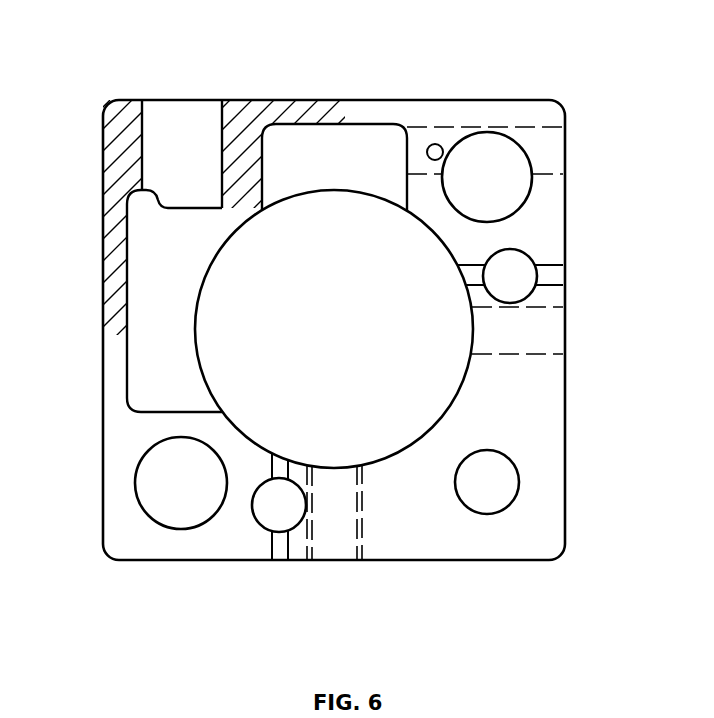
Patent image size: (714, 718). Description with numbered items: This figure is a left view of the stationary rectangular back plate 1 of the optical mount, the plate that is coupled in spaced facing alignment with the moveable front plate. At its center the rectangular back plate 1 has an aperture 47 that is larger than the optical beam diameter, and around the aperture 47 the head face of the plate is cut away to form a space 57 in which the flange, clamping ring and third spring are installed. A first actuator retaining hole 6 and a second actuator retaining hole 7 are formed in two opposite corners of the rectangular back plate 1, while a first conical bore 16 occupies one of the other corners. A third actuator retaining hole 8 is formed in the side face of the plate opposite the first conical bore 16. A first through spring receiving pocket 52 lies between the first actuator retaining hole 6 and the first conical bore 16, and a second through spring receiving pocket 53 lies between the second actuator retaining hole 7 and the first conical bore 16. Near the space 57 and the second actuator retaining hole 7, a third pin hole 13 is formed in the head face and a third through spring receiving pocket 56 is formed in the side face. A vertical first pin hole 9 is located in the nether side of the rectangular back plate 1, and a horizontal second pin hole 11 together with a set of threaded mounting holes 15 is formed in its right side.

The rectangular back plate 1 is at (181, 180).
The first actuator retaining hole 6 is at (165, 544).
The second actuator retaining hole 7 is at (508, 121).
The third actuator retaining hole 8 is at (188, 216).
The first pin hole 9 is at (326, 552).
The second pin hole 11 is at (565, 248).
The third pin hole 13 is at (462, 90).
The threaded mounting holes 15 is at (535, 333).
The first conical bore 16 is at (502, 470).
The aperture 47 is at (334, 329).
The first through spring receiving pocket 52 is at (239, 565).
The second through spring receiving pocket 53 is at (578, 230).
The third through spring receiving pocket 56 is at (539, 136).
The space 57 is at (346, 116).